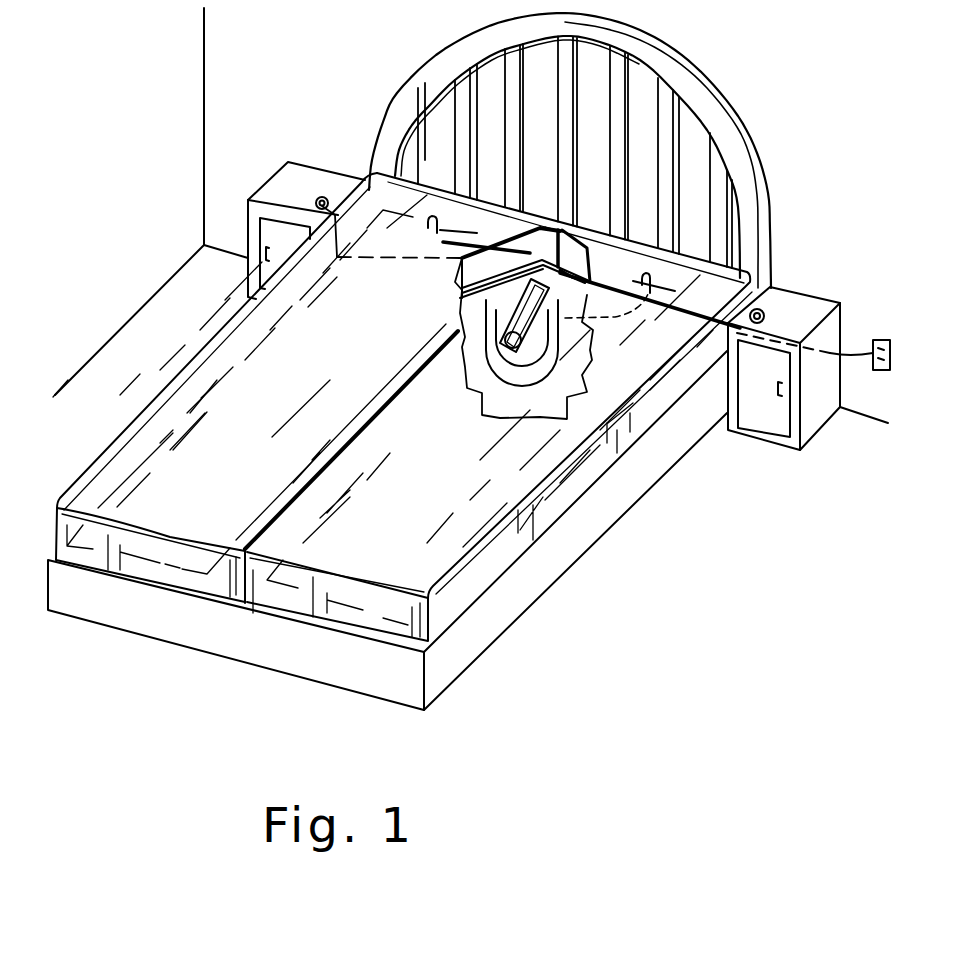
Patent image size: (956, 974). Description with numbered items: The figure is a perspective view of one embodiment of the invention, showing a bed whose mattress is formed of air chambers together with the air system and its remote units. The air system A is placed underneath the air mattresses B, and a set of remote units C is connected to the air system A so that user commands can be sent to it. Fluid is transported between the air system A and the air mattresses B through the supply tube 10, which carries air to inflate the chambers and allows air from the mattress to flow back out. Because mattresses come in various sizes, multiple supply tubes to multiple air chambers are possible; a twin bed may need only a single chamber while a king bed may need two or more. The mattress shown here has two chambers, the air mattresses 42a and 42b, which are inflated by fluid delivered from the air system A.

The supply tube 10 is at (587, 356).
The air mattress 42a is at (455, 550).
The air mattress 42b is at (147, 443).
The air system A is at (503, 408).
The air mattresses B is at (343, 608).
The remote units C is at (305, 182).